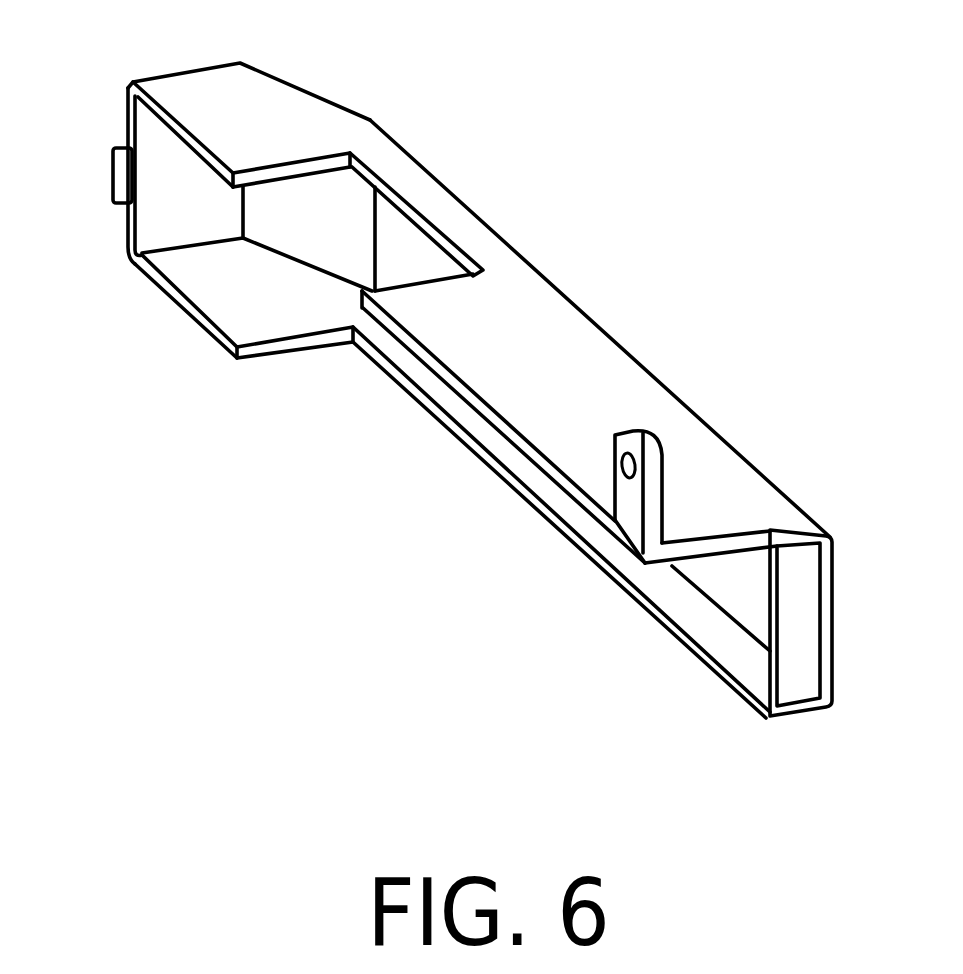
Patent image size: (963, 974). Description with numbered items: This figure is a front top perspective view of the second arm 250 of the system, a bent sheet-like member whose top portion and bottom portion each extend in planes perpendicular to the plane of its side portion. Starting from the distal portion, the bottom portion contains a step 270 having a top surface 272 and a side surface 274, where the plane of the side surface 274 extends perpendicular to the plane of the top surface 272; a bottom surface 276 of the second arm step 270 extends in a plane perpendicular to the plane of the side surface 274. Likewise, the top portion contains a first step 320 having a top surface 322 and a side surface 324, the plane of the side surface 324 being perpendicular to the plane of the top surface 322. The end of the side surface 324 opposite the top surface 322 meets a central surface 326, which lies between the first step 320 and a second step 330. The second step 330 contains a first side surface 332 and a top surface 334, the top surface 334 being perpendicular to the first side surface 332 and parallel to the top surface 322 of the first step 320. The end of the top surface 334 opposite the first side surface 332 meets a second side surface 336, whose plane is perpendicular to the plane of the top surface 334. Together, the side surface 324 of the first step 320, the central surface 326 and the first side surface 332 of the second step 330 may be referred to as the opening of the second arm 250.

The second arm 250 is at (237, 692).
The step 270 is at (227, 290).
The top surface 272 is at (200, 338).
The side surface 274 is at (293, 358).
The bottom surface 276 is at (616, 589).
The first step 320 is at (232, 124).
The top surface 322 is at (190, 145).
The side surface 324 is at (298, 160).
The central surface 326 is at (428, 206).
The second step 330 is at (580, 396).
The first side surface 332 is at (456, 286).
The top surface 334 is at (527, 456).
The second side surface 336 is at (723, 532).